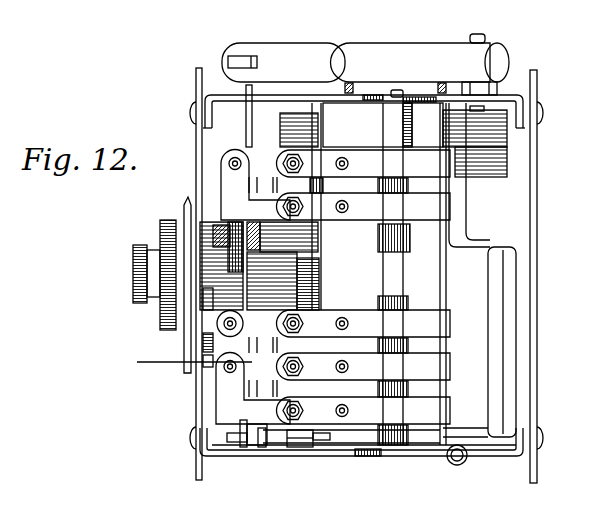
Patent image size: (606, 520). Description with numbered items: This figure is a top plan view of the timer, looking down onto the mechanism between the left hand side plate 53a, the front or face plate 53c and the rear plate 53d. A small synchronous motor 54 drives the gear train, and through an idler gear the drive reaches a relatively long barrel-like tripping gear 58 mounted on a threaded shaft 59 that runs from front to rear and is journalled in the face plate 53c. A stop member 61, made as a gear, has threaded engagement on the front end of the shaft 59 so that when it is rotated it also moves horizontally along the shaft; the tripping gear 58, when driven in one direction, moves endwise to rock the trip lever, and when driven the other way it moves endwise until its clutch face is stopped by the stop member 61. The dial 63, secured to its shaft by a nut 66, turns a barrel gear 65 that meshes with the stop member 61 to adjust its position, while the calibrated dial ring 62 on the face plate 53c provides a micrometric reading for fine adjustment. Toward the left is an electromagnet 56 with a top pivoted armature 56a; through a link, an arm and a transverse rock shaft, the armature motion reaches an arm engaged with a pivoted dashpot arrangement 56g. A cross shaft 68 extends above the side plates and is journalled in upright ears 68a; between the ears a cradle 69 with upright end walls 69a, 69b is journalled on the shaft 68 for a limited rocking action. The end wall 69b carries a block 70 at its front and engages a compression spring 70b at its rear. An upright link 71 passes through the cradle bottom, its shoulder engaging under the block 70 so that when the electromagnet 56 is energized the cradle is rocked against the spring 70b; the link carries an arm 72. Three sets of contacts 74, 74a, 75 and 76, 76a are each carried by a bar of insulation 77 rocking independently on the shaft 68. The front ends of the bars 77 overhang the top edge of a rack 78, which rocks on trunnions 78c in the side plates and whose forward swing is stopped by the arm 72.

The left hand side plate 53a is at (305, 70).
The front or face plate 53c is at (200, 136).
The rear plate 53d is at (537, 206).
The synchronous motor 54 is at (521, 276).
The electromagnet 56 is at (352, 90).
The top pivoted armature 56a is at (281, 123).
The pivoted dashpot arrangement 56g is at (362, 43).
The tripping gear 58 is at (301, 245).
The threaded shaft 59 is at (212, 232).
The stop member 61 is at (240, 246).
The calibrated dial ring 62 is at (192, 303).
The dial 63 is at (180, 279).
The barrel gear 65 is at (210, 298).
The nut 66 is at (162, 258).
The cross shaft 68 is at (399, 247).
The upright ears 68a is at (384, 95).
The cradle 69 is at (427, 123).
The upright end wall 69a is at (413, 97).
The upright end wall 69b is at (345, 449).
The block 70 is at (302, 470).
The compression spring 70b is at (464, 462).
The upright link 71 is at (276, 448).
The arm 72 is at (230, 433).
The upper contact 74 is at (227, 172).
The lower contact 74a is at (238, 151).
The upper contact 75 is at (230, 333).
The upper contact 76 is at (230, 386).
The lower contact 76a is at (184, 370).
The bar of insulation 77 is at (364, 287).
The rack 78 is at (292, 277).
The trunnion 78c is at (245, 462).